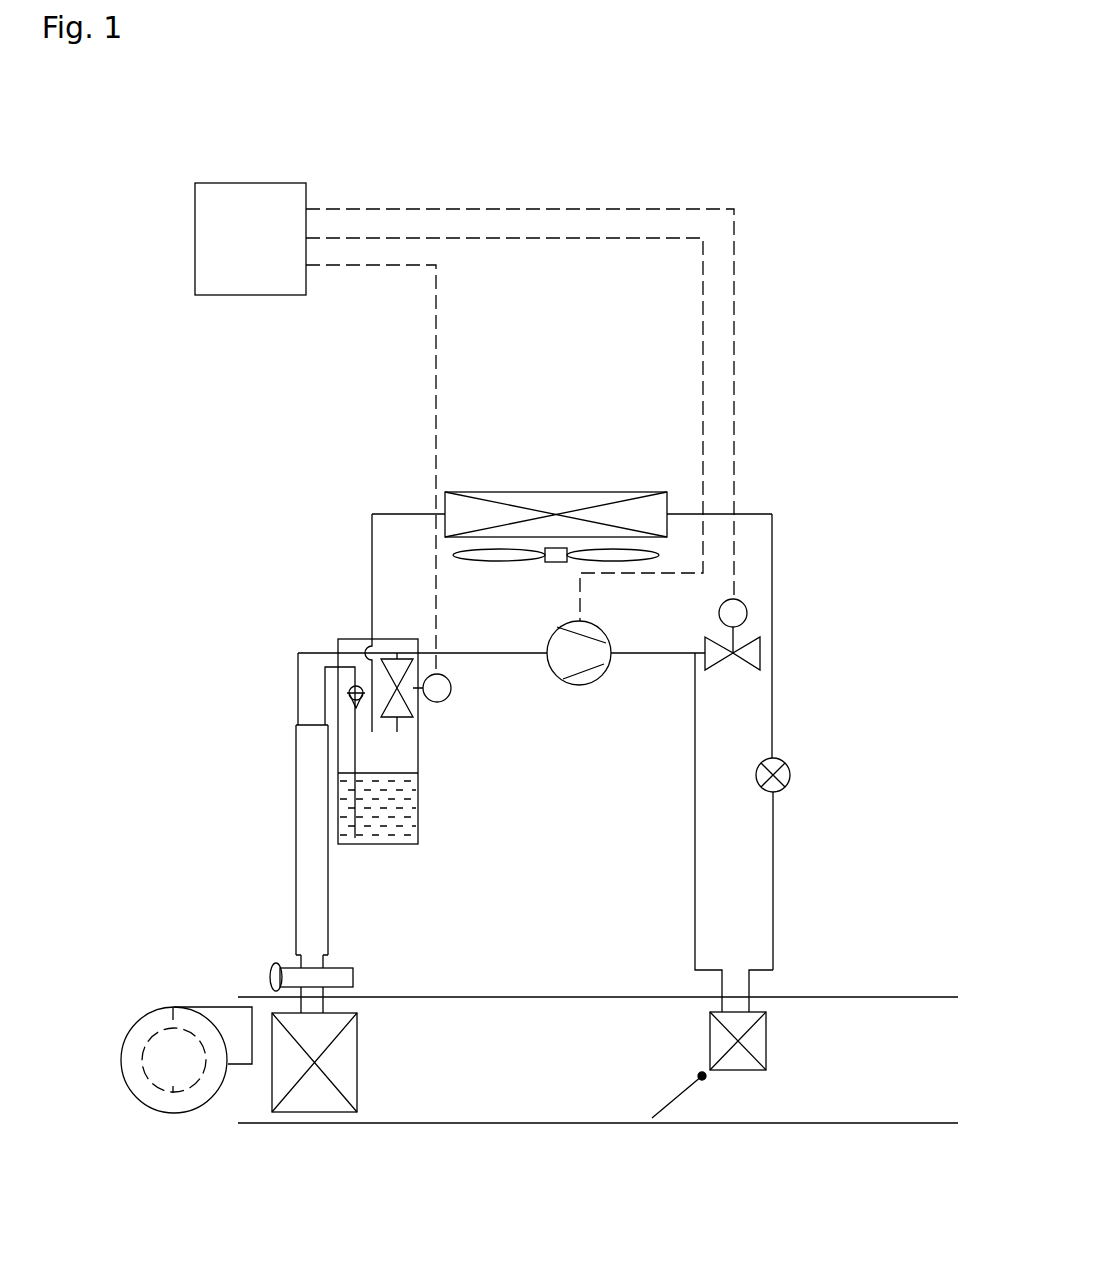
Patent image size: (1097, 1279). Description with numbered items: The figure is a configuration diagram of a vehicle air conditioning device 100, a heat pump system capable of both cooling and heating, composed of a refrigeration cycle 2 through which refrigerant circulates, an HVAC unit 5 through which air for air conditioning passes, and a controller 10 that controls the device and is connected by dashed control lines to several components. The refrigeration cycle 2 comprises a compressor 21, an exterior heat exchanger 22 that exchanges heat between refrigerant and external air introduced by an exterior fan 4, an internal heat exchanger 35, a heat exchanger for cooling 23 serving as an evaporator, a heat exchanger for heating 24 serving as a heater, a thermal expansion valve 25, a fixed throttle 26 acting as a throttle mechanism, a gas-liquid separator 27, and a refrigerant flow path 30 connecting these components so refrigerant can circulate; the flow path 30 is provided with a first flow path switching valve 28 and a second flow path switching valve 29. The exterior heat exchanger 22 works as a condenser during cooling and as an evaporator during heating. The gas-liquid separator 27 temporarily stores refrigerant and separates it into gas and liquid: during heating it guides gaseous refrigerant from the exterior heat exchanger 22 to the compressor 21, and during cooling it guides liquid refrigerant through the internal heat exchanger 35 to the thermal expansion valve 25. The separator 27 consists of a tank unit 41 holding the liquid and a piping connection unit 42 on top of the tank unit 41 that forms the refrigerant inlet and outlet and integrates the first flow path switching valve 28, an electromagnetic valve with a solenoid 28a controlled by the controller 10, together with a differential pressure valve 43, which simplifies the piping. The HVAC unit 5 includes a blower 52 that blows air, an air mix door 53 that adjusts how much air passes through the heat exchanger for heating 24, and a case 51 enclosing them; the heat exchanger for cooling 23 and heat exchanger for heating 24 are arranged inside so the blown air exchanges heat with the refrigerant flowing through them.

The air conditioning device 100 is at (819, 165).
The controller 10 is at (246, 213).
The refrigeration cycle 2 is at (352, 408).
The exterior heat exchanger 22 is at (541, 492).
The exterior fan 4 is at (553, 562).
The refrigerant flow path 30 is at (522, 656).
The internal heat exchanger 35 is at (305, 828).
The thermal expansion valve 25 is at (270, 975).
The piping connection unit 42 is at (402, 639).
The gas-liquid separator 27 is at (345, 639).
The tank unit 41 is at (420, 780).
The differential pressure valve 43 is at (348, 694).
The first flow path switching valve 28 is at (410, 705).
The solenoid 28a is at (451, 690).
The compressor 21 is at (579, 685).
The second flow path switching valve 29 is at (763, 648).
The fixed throttle 26 is at (790, 778).
The heat exchanger for heating 24 is at (760, 1040).
The heat exchanger for cooling 23 is at (318, 1093).
The case 51 is at (601, 1125).
The HVAC unit 5 is at (529, 1160).
The blower 52 is at (183, 1077).
The air mix door 53 is at (682, 1097).